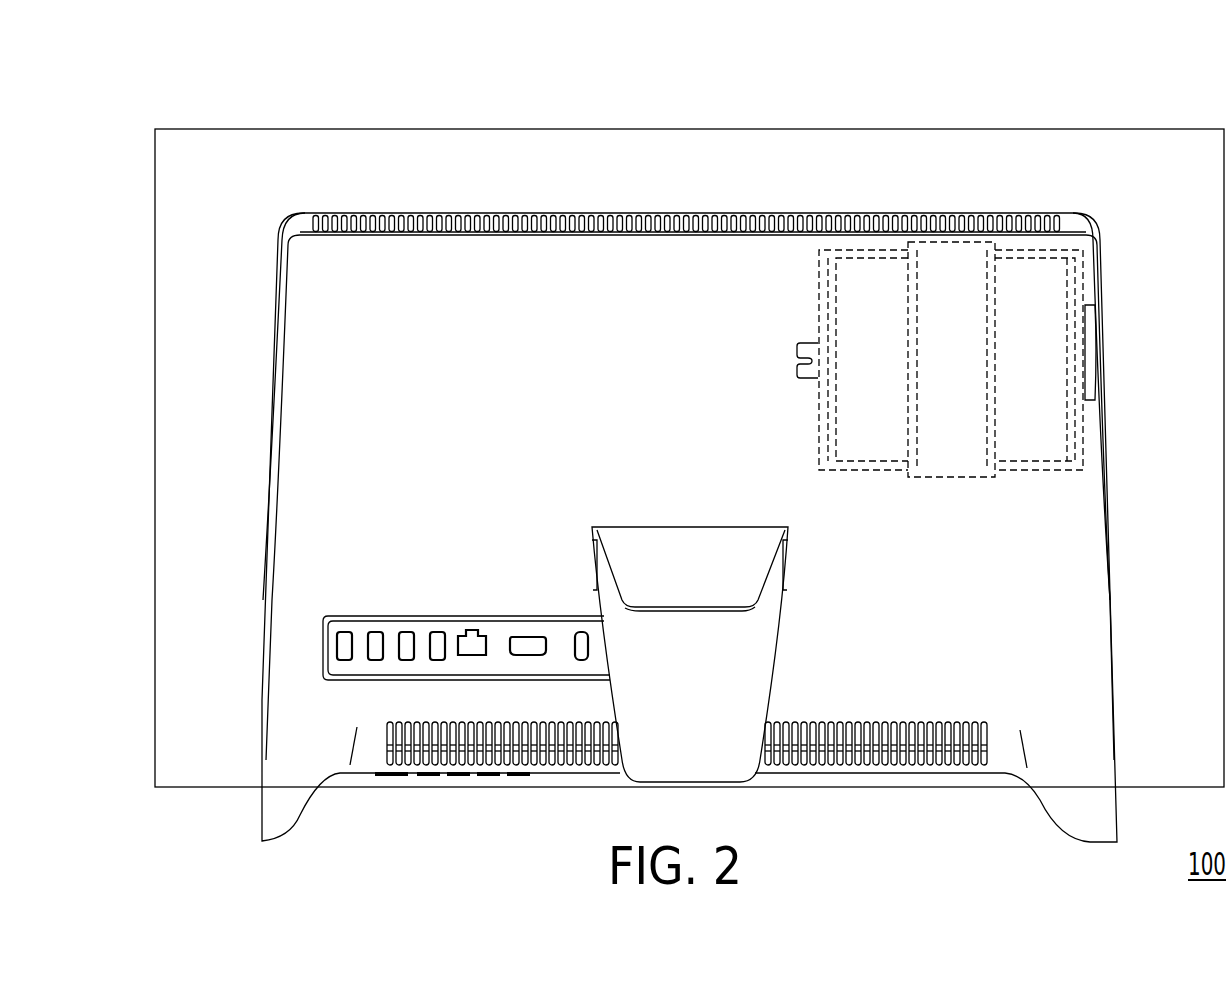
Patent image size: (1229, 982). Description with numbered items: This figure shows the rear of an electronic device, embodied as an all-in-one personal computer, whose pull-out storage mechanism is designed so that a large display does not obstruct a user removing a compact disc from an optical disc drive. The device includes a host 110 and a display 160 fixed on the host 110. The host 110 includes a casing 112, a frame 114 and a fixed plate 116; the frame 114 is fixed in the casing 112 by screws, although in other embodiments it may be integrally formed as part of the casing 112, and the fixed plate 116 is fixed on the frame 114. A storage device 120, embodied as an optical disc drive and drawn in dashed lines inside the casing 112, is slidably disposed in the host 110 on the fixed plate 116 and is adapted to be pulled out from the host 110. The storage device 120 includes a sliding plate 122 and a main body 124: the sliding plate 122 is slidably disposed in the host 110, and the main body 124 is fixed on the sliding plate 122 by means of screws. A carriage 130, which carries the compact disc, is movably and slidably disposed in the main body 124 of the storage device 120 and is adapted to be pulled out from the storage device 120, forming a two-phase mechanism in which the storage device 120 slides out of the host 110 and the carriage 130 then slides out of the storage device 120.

The host 110 is at (427, 196).
The casing 112 is at (660, 255).
The frame 114 is at (897, 268).
The fixed plate 116 is at (915, 305).
The storage device 120 is at (844, 68).
The sliding plate 122 is at (817, 300).
The main body 124 is at (836, 298).
The carriage 130 is at (1035, 258).
The display 160 is at (1172, 140).